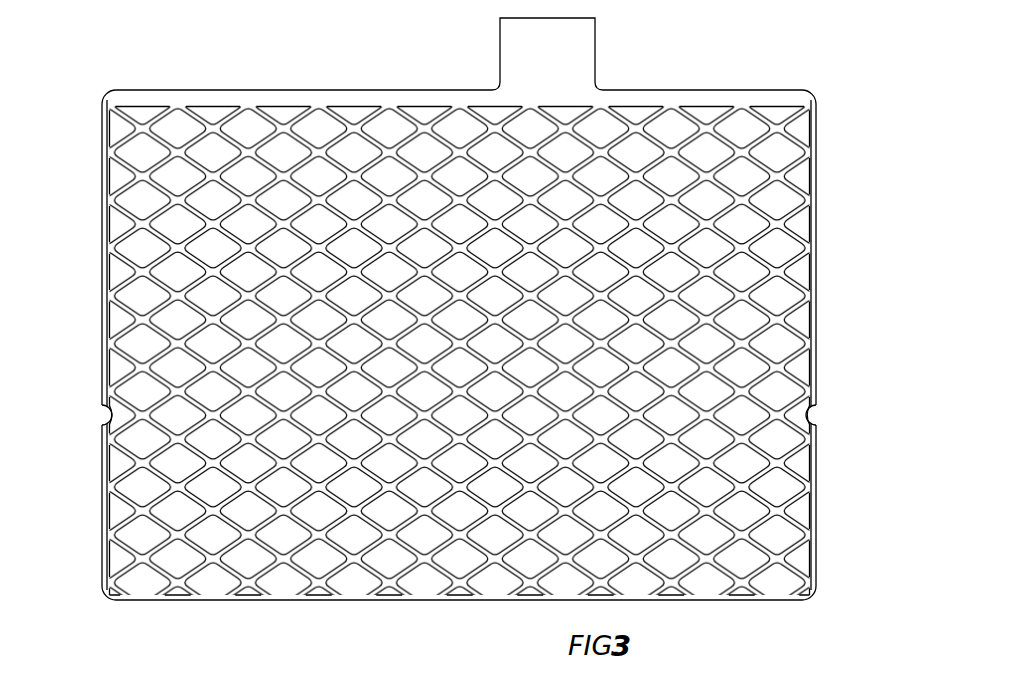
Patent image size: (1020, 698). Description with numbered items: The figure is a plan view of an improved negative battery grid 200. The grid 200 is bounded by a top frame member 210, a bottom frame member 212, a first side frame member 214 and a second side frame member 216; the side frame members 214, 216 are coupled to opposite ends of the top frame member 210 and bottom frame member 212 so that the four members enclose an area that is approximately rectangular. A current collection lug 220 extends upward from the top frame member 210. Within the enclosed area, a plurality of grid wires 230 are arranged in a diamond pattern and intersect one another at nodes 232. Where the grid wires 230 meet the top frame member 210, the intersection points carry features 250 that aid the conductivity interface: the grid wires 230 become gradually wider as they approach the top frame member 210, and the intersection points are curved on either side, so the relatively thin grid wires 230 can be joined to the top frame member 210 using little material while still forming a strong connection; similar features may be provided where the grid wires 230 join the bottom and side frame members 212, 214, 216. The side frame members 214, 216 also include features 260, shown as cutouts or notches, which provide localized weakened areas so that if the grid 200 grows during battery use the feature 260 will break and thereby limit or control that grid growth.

The negative grid 200 is at (798, 65).
The top frame member 210 is at (424, 100).
The bottom frame member 212 is at (637, 597).
The first side frame member 214 is at (108, 320).
The second side frame member 216 is at (813, 510).
The current collection lug 220 is at (577, 53).
The grid wires 230 is at (793, 230).
The nodes 232 is at (815, 458).
The conductivity enhancing features 250 is at (662, 107).
The grid growth control features 260 is at (104, 418).